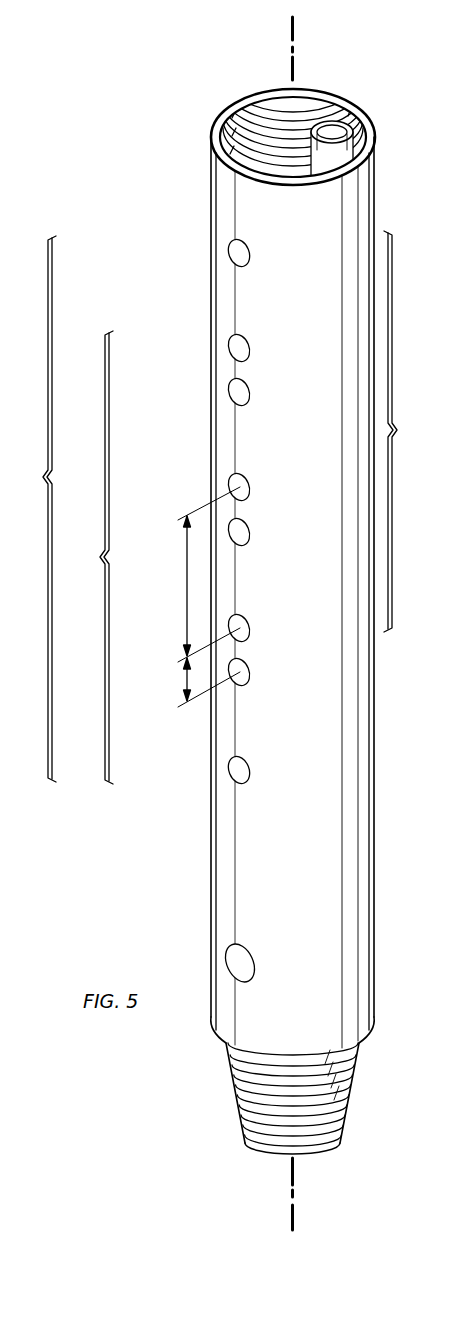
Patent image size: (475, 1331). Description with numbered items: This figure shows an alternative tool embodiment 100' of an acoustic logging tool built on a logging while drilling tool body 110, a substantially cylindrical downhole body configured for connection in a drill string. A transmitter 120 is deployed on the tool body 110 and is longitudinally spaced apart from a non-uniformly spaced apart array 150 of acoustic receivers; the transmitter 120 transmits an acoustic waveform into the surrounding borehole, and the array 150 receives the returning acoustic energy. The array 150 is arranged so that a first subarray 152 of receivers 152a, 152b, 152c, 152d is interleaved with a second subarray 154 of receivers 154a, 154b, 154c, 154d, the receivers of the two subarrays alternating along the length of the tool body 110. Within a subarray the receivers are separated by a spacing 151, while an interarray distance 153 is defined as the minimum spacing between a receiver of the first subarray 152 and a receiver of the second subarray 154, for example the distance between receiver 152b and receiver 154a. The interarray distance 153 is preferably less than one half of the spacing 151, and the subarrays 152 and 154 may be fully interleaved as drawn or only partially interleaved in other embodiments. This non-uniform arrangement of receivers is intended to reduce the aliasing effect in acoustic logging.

The tool embodiment 100' is at (113, 121).
The tool body 110 is at (212, 835).
The transmitter 120 is at (249, 951).
The array 150 is at (30, 509).
The spacing 151 is at (186, 588).
The first subarray 152 is at (87, 557).
The receiver 152a is at (249, 775).
The receiver 152b is at (249, 633).
The receiver 152c is at (249, 492).
The receiver 152d is at (249, 353).
The interarray distance 153 is at (186, 687).
The second subarray 154 is at (409, 431).
The receiver 154a is at (249, 677).
The receiver 154b is at (249, 537).
The receiver 154c is at (249, 397).
The receiver 154d is at (249, 258).